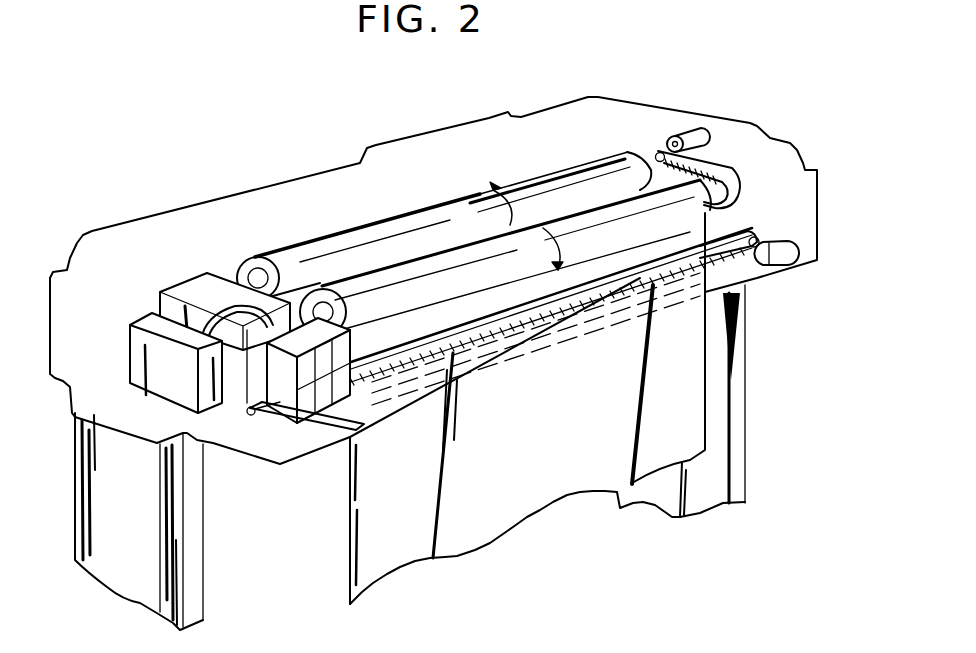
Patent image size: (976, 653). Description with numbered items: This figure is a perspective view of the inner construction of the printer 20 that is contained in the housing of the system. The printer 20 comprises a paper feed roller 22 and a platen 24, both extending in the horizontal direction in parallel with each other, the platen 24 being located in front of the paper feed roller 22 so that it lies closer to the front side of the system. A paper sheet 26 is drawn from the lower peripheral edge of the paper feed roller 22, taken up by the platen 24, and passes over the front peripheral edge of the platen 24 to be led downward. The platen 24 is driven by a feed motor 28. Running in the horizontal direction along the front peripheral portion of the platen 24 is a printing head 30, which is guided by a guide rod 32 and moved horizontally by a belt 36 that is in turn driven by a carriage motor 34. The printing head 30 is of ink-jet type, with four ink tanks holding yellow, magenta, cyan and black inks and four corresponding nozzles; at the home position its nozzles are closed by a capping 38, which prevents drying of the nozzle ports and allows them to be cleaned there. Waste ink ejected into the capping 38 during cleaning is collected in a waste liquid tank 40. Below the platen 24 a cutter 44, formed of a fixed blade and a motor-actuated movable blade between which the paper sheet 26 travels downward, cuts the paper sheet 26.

The printer 20 is at (474, 190).
The paper feed roller 22 is at (607, 150).
The platen 24 is at (738, 185).
The paper sheet 26 is at (705, 407).
The feed motor 28 is at (684, 134).
The printing head 30 is at (313, 426).
The guide rod 32 is at (250, 415).
The carriage motor 34 is at (779, 267).
The belt 36 is at (740, 228).
The capping 38 is at (180, 286).
The waste liquid tank 40 is at (128, 325).
The cutter 44 is at (722, 280).